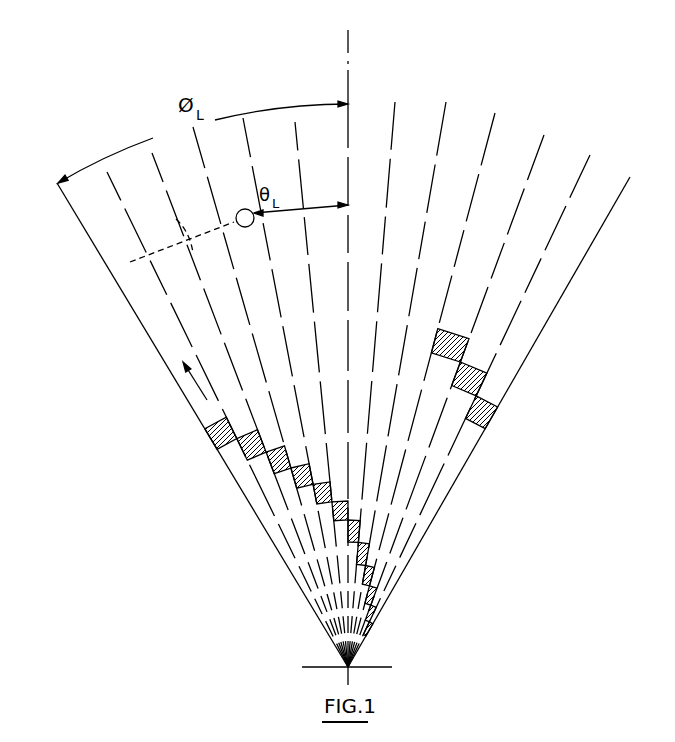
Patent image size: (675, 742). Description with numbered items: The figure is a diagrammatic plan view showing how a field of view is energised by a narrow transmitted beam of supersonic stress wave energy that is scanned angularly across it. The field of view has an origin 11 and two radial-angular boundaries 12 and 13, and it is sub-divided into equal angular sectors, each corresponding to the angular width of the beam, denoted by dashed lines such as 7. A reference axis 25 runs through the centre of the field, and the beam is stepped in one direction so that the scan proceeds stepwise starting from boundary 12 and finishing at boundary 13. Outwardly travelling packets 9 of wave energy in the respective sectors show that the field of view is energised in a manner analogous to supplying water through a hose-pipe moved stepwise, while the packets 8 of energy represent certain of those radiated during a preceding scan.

The dashed lines denoting equal angular sectors 7 is at (173, 216).
The packets of energy from a preceding scan 8 is at (489, 411).
The outwardly travelling packets of wave energy 9 is at (204, 430).
The origin of the field of view 11 is at (345, 666).
The radial-angular boundary 12 is at (143, 328).
The radial-angular boundary 13 is at (551, 318).
The reference axis 25 is at (349, 83).